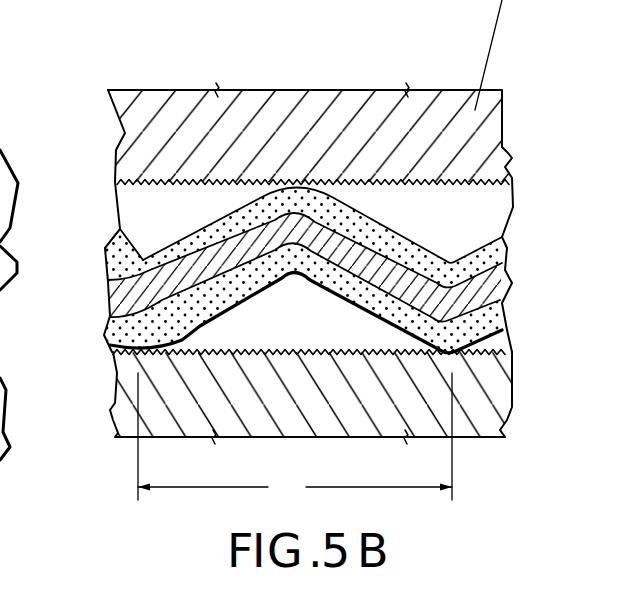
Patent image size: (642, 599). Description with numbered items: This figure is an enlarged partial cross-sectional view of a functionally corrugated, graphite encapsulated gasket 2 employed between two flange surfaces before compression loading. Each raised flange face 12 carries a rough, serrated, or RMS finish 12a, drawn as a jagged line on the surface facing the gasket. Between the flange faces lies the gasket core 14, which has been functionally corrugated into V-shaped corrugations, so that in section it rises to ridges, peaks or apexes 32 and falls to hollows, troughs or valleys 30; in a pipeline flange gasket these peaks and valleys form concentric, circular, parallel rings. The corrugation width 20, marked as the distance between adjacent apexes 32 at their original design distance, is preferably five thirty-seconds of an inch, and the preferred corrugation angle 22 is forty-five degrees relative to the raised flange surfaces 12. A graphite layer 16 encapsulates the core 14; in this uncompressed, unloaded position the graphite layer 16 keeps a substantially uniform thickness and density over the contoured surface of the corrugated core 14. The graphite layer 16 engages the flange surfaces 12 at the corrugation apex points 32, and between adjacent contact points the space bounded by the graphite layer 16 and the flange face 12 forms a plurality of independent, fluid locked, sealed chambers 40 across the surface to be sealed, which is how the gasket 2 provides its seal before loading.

The gasket 2 is at (259, 209).
The raised flange face 12 is at (115, 438).
The rough, serrated, or RMS finish 12a is at (140, 183).
The gasket core 14 is at (116, 294).
The graphite layer 16 is at (251, 212).
The corrugation width 20 is at (295, 437).
The corrugation angle 22 is at (340, 193).
The hollows, troughs or valleys 30 is at (118, 230).
The ridges, peaks or apexes 32 is at (297, 180).
The sealed chambers 40 is at (172, 197).